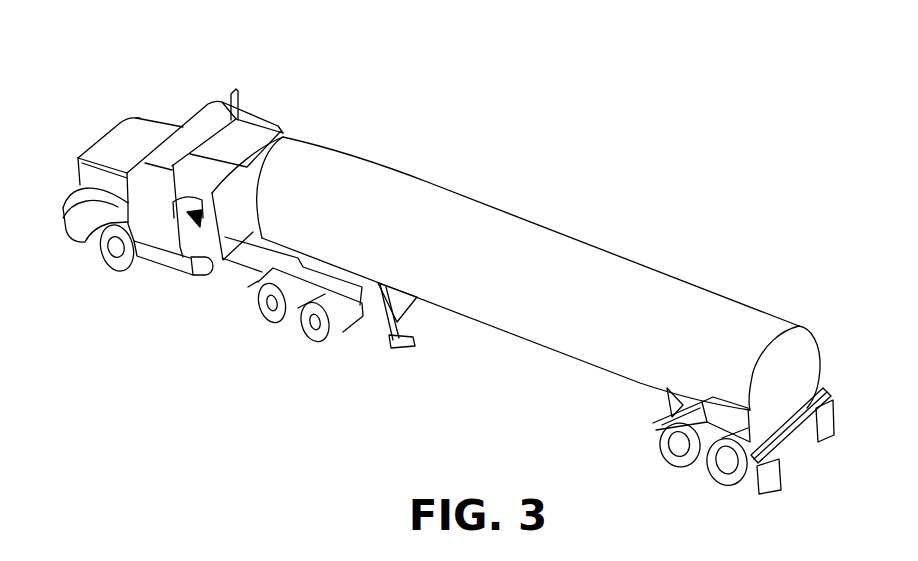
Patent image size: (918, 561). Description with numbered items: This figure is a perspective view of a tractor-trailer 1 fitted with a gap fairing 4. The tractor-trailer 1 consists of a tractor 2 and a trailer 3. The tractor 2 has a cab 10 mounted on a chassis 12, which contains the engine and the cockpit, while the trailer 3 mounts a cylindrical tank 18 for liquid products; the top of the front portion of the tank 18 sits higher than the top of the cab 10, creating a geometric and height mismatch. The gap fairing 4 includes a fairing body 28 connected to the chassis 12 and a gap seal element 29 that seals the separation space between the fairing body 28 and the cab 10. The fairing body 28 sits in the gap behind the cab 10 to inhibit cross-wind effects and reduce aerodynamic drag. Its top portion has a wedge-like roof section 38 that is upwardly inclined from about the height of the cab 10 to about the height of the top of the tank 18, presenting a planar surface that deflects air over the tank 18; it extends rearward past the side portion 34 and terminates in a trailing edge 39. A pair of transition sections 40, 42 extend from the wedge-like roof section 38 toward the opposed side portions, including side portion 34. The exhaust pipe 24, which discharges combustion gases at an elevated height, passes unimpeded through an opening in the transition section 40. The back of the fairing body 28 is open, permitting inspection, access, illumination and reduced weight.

The tractor-trailer 1 is at (623, 150).
The tractor 2 is at (142, 60).
The trailer 3 is at (487, 188).
The gap fairing 4 is at (283, 96).
The cab 10 is at (156, 193).
The chassis 12 is at (242, 261).
The cylindrical tank 18 is at (543, 327).
The exhaust pipe 24 is at (232, 94).
The fairing body 28 is at (262, 92).
The gap seal element 29 is at (177, 203).
The side portion 34 is at (195, 238).
The wedge-like roof section 38 is at (250, 140).
The trailing edge 39 is at (262, 155).
The transition section 40 is at (288, 122).
The transition section 42 is at (203, 175).